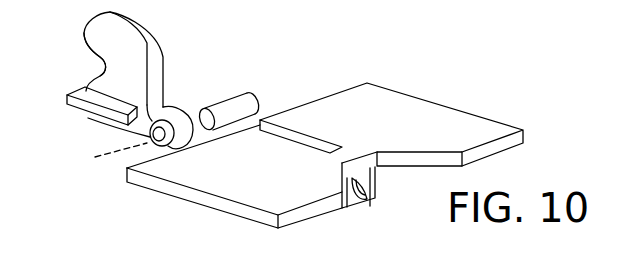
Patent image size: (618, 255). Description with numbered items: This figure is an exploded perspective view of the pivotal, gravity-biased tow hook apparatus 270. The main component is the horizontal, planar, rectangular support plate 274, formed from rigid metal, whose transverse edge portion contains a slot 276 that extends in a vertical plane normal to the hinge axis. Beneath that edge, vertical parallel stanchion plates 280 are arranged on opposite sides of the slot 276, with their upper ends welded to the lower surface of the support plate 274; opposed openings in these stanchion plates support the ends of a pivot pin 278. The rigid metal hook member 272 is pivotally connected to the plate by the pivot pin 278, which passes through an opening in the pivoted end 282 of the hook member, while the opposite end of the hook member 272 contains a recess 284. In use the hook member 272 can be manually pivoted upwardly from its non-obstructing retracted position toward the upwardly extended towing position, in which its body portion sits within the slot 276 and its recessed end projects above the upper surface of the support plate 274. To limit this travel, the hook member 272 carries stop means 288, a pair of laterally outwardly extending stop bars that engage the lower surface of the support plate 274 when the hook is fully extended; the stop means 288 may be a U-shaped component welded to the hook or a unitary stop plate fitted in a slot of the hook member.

The base plate 270 is at (172, 197).
The hook member 272 is at (127, 65).
The support plate 274 is at (393, 118).
The slot 276 is at (297, 130).
The pivot pin 278 is at (231, 110).
The stanchion plates 280 is at (353, 208).
The roller 282 is at (157, 132).
The recess 284 is at (98, 63).
The stop means 288 is at (82, 112).